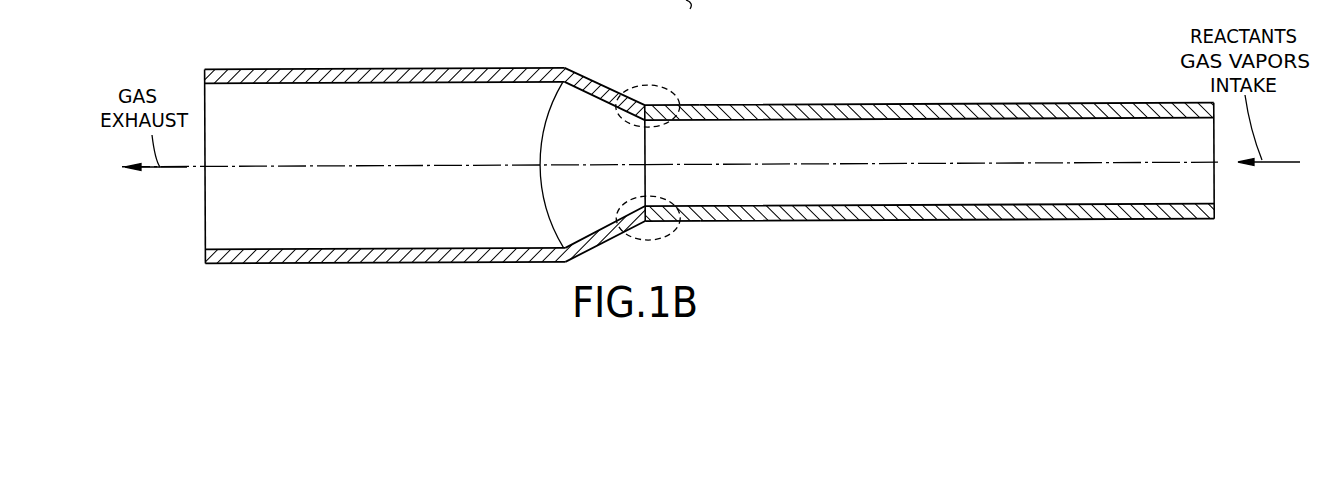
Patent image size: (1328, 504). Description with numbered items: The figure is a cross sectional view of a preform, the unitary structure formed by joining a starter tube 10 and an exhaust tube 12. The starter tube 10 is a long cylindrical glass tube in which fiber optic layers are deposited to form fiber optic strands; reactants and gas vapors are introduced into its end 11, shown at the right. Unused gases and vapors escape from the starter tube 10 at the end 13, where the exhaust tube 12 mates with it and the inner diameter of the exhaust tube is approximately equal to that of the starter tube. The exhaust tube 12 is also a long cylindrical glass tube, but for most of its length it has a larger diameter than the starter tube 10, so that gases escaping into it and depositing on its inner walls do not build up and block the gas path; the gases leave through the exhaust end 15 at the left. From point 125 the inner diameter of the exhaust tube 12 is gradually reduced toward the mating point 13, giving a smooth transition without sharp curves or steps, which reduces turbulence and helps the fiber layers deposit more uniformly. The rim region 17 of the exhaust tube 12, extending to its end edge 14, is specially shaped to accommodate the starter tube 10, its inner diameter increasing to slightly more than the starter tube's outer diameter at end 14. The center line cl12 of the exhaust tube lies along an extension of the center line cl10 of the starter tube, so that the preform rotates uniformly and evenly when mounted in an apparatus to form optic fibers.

The starter tube 10 is at (828, 104).
The end of starter tube 11 is at (1215, 212).
The exhaust tube 12 is at (408, 66).
The mating point 13 is at (632, 113).
The end edge of exhaust tube 14 is at (665, 102).
The exhaust end 15 is at (205, 213).
The rim region 17 is at (648, 87).
The point 125 is at (584, 165).
The center line of starter tube cl10 is at (921, 162).
The center line of exhaust tube cl12 is at (430, 162).